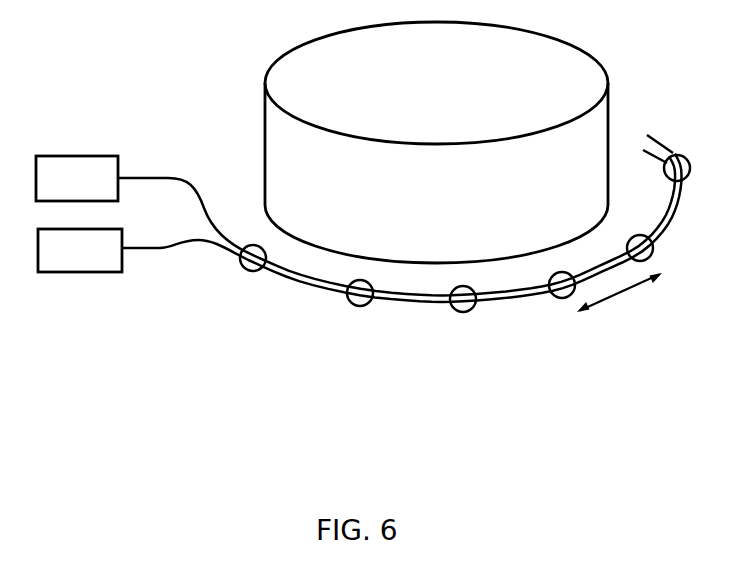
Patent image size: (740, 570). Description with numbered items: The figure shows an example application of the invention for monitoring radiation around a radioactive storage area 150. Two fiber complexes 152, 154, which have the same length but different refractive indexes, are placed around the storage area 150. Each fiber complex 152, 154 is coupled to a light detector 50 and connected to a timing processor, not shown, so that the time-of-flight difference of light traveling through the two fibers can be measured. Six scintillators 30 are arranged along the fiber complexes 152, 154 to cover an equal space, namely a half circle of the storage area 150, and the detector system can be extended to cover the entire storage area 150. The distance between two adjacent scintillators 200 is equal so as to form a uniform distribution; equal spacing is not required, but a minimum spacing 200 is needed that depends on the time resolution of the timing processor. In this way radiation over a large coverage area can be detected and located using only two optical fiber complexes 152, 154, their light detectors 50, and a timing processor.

The radioactive storage area 150 is at (295, 76).
The light detector 50 is at (78, 156).
The fiber complex 152 is at (153, 176).
The fiber complex 154 is at (160, 250).
The scintillator 30 is at (252, 272).
The spacing between adjacent scintillators 200 is at (627, 292).